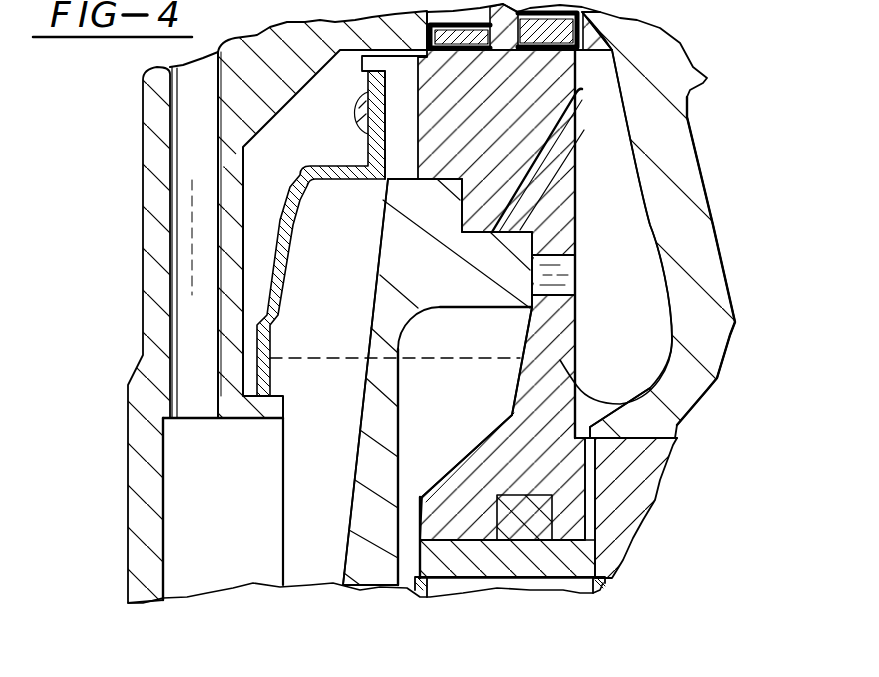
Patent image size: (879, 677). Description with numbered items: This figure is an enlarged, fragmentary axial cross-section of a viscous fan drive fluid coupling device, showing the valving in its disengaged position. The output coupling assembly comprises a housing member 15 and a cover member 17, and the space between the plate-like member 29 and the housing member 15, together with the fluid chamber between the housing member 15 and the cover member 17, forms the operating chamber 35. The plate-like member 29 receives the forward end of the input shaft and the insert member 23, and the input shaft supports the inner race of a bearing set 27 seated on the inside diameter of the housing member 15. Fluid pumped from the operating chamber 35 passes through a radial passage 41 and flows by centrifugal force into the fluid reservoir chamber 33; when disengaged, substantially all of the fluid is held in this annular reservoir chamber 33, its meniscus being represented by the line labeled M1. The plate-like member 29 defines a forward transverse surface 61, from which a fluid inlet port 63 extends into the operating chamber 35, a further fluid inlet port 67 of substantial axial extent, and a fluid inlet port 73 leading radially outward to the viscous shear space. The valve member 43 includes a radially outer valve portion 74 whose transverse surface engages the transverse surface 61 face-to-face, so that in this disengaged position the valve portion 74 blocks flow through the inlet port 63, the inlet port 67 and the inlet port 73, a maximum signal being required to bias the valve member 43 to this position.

The housing member 15 is at (677, 163).
The cover member 17 is at (158, 160).
The radial passage 41 is at (185, 245).
The fluid inlet port 73 is at (397, 136).
The fluid reservoir chamber 33 is at (330, 333).
The fluid level line M1 is at (323, 362).
The radially outer valve portion 74 is at (462, 258).
The valve member 43 is at (368, 499).
The bearing set 27 is at (623, 500).
The forward transverse surface 61 is at (513, 420).
The plate-like member 29 is at (630, 403).
The operating chamber 35 is at (647, 265).
The fluid inlet port 63 is at (560, 285).
The fluid inlet port 67 is at (543, 170).
The insert member 23 is at (533, 567).